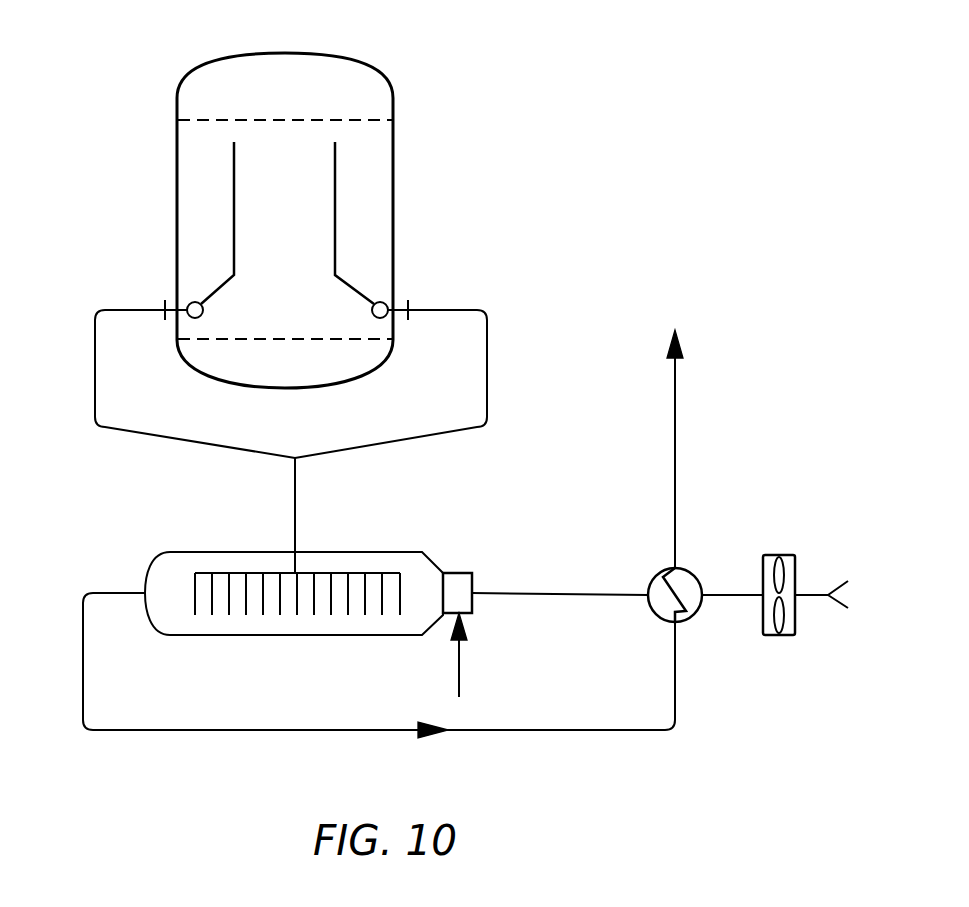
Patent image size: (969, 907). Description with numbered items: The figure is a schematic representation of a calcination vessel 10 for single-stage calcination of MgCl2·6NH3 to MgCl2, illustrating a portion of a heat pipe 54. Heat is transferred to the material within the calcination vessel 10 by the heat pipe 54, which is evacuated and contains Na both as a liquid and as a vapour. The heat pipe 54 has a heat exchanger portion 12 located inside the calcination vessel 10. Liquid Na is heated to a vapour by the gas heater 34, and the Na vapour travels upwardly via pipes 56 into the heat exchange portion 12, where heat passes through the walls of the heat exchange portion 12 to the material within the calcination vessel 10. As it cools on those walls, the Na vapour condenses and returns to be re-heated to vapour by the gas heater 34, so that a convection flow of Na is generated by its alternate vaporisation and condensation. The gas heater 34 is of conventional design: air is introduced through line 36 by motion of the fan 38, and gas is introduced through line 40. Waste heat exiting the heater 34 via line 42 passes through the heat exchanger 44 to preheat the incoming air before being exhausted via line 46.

The calcination vessel 10 is at (176, 135).
The heat exchanger portion 12 is at (222, 230).
The heat pipe 54 is at (337, 241).
The pipes 56 is at (93, 363).
The gas heater 34 is at (158, 560).
The line 40 is at (462, 665).
The line 42 is at (103, 732).
The heat exchanger 44 is at (692, 572).
The fan 38 is at (795, 555).
The line 36 is at (810, 597).
The line 46 is at (674, 377).